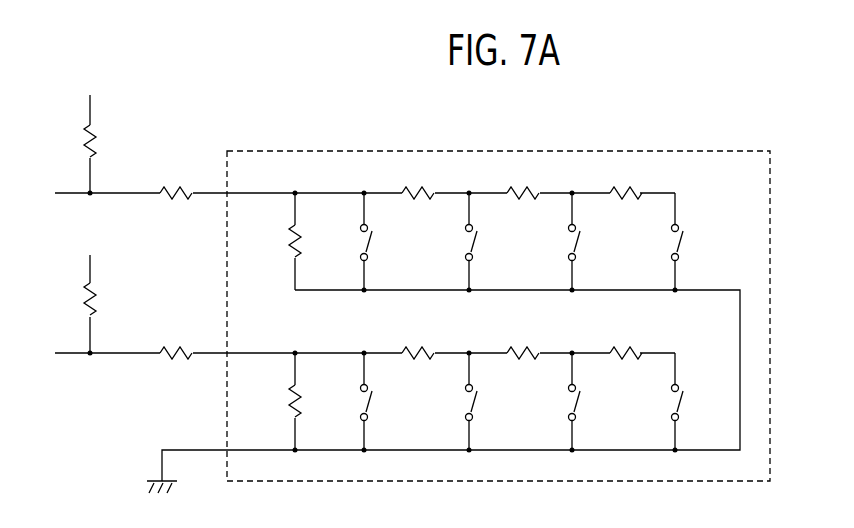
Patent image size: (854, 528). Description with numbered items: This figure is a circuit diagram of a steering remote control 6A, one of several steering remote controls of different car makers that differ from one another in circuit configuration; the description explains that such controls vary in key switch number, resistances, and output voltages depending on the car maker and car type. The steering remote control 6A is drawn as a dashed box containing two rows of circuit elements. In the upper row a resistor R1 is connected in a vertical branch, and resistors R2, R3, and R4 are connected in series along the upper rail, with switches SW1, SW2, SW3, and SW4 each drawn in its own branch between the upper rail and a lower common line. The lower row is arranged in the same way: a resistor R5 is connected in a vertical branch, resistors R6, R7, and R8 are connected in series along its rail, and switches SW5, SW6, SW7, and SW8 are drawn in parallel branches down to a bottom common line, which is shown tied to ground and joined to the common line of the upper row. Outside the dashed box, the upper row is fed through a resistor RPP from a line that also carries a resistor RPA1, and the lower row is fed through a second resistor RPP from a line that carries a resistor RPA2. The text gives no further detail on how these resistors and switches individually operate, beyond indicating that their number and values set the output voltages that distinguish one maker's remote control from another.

The steering remote control 6A is at (665, 151).
The resistor RPA1 is at (112, 144).
The resistor RPA2 is at (112, 304).
The resistor RPP is at (174, 258).
The resistor R1 is at (309, 241).
The resistor R2 is at (418, 178).
The resistor R3 is at (523, 178).
The resistor R4 is at (626, 178).
The resistor R5 is at (309, 401).
The resistor R6 is at (418, 338).
The resistor R7 is at (523, 338).
The resistor R8 is at (626, 338).
The switch SW1 is at (392, 241).
The switch SW2 is at (497, 241).
The switch SW3 is at (600, 241).
The switch SW4 is at (703, 241).
The switch SW5 is at (392, 401).
The switch SW6 is at (497, 401).
The switch SW7 is at (600, 401).
The switch SW8 is at (703, 401).